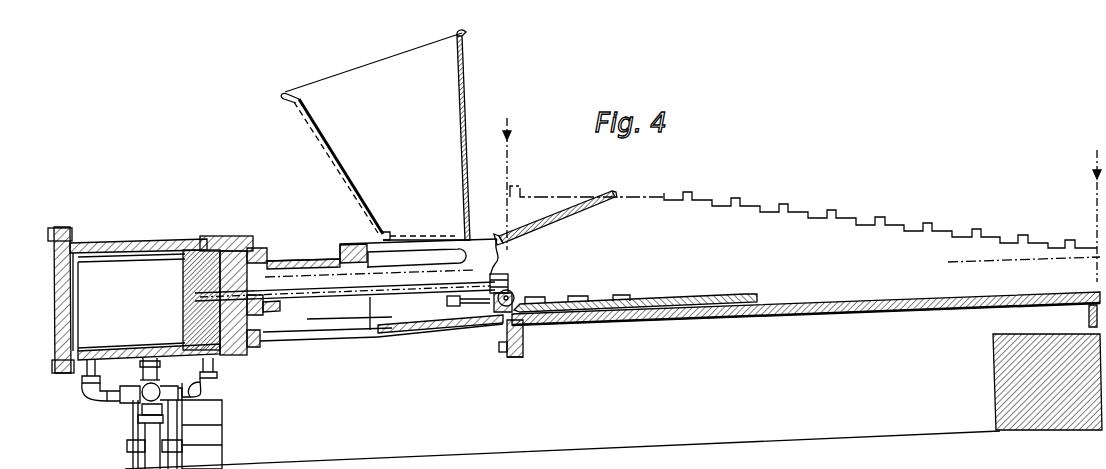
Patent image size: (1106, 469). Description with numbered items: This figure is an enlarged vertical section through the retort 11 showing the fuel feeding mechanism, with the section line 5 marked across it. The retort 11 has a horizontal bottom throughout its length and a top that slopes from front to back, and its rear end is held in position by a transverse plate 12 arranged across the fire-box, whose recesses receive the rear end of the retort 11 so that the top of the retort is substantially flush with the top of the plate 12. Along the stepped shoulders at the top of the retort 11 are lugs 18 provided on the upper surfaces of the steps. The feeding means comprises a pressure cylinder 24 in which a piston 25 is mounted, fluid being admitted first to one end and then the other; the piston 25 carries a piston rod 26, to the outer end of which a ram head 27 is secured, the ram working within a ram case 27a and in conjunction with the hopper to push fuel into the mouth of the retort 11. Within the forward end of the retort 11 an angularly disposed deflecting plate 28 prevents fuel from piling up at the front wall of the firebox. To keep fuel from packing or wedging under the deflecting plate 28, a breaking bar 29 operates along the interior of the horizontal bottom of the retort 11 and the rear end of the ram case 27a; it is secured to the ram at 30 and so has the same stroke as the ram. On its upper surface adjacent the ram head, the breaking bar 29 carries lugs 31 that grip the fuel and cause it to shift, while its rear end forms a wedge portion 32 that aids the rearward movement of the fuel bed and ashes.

The section line 5 is at (802, 200).
The retort 11 is at (564, 150).
The plate 12 is at (1088, 316).
The lugs 18 is at (733, 197).
The pressure cylinder 24 is at (136, 262).
The piston 25 is at (200, 247).
The piston rod 26 is at (308, 283).
The ram head 27 is at (418, 248).
The ram case 27a is at (446, 330).
The deflecting plate 28 is at (568, 200).
The breaking bar 29 is at (660, 301).
The securing point of breaking bar to ram 30 is at (513, 295).
The lugs 31 is at (585, 285).
The wedge portion 32 is at (752, 300).